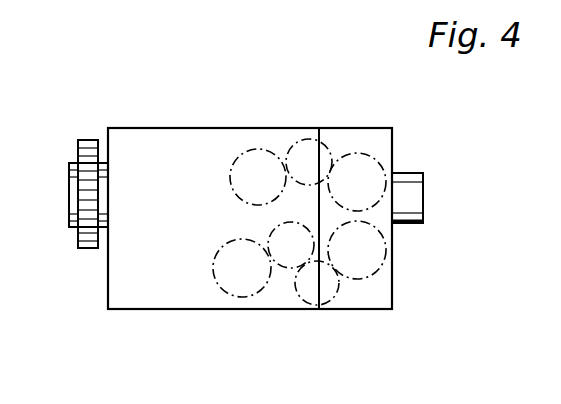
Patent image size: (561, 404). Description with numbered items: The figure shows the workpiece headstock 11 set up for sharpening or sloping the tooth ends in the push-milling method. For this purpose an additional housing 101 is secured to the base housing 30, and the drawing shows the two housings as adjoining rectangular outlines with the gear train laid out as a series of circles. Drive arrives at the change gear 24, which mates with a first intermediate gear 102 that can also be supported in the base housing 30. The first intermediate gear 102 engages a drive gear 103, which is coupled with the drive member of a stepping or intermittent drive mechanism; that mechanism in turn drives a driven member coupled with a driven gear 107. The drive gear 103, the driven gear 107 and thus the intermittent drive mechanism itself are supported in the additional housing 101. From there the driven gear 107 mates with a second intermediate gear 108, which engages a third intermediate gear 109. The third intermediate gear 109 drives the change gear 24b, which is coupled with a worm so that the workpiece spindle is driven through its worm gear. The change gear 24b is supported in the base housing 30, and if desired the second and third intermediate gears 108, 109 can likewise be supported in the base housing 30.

The base housing 30 is at (132, 140).
The workpiece headstock 11 is at (132, 293).
The change gear 24 is at (252, 140).
The change gear 24b is at (230, 297).
The additional housing 101 is at (385, 142).
The first intermediate gear 102 is at (300, 136).
The drive gear 103 is at (387, 160).
The driven gear 107 is at (380, 281).
The second intermediate gear 108 is at (341, 287).
The third intermediate gear 109 is at (283, 270).